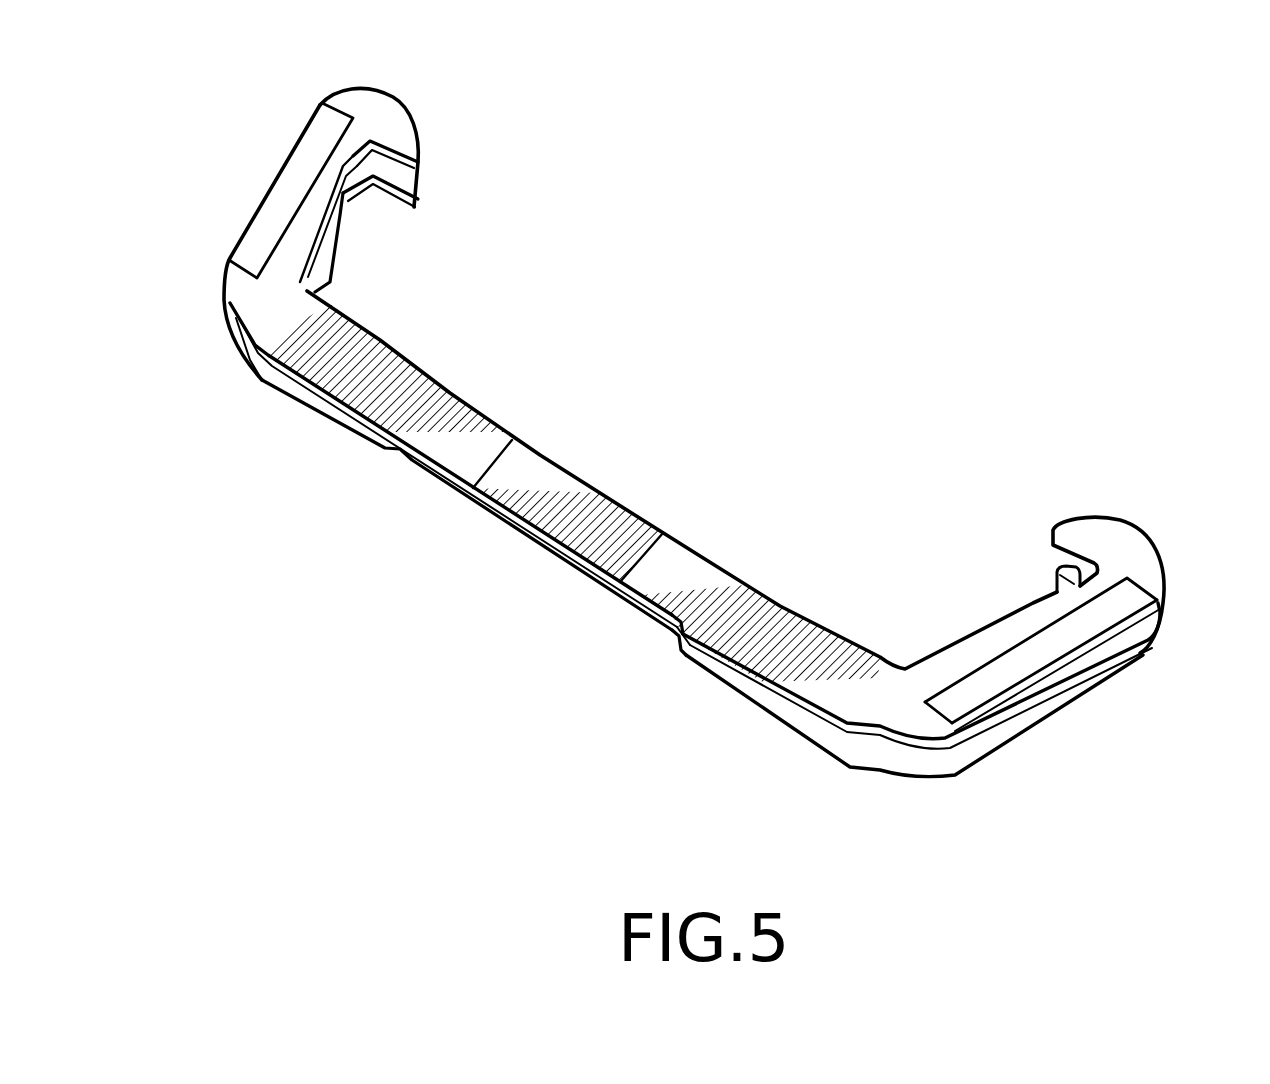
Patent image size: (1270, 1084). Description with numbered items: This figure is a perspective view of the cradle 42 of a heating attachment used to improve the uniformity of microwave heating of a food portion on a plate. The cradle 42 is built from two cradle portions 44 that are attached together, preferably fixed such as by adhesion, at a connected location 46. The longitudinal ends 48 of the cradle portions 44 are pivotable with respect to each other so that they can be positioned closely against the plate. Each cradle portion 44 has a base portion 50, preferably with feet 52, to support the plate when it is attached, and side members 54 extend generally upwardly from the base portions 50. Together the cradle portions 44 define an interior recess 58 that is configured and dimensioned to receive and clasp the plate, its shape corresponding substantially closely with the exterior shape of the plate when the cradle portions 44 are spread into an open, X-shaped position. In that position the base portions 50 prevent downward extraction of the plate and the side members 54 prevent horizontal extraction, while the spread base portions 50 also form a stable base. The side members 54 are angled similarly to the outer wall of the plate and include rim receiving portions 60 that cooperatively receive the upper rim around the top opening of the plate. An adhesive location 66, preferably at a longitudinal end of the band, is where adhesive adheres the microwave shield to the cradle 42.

The cradle 42 is at (405, 347).
The cradle portions 44 is at (803, 654).
The connected location 46 is at (573, 505).
The longitudinal ends 48 is at (1013, 663).
The base portions 50 is at (285, 380).
The feet 52 is at (715, 632).
The side members 54 is at (317, 198).
The interior recess 58 is at (960, 570).
The rim receiving portions 60 is at (363, 202).
The adhesive location 66 is at (316, 128).